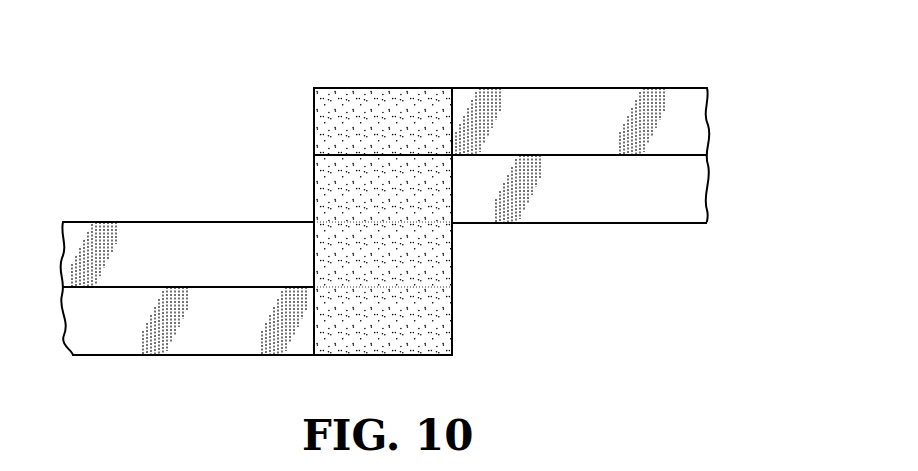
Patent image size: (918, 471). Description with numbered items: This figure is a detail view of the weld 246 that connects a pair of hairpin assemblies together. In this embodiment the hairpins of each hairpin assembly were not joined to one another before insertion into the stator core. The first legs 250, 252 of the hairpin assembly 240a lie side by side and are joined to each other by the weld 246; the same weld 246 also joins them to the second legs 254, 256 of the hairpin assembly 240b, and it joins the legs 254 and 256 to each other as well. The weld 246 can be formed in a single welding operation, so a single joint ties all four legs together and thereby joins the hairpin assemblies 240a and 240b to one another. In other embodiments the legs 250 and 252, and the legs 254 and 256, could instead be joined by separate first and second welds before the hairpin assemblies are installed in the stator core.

The hairpin assembly 240a is at (147, 220).
The hairpin assembly 240b is at (528, 88).
The weld 246 is at (433, 308).
The first leg 250 is at (208, 357).
The first leg 252 is at (220, 220).
The second leg 254 is at (573, 224).
The second leg 256 is at (608, 88).